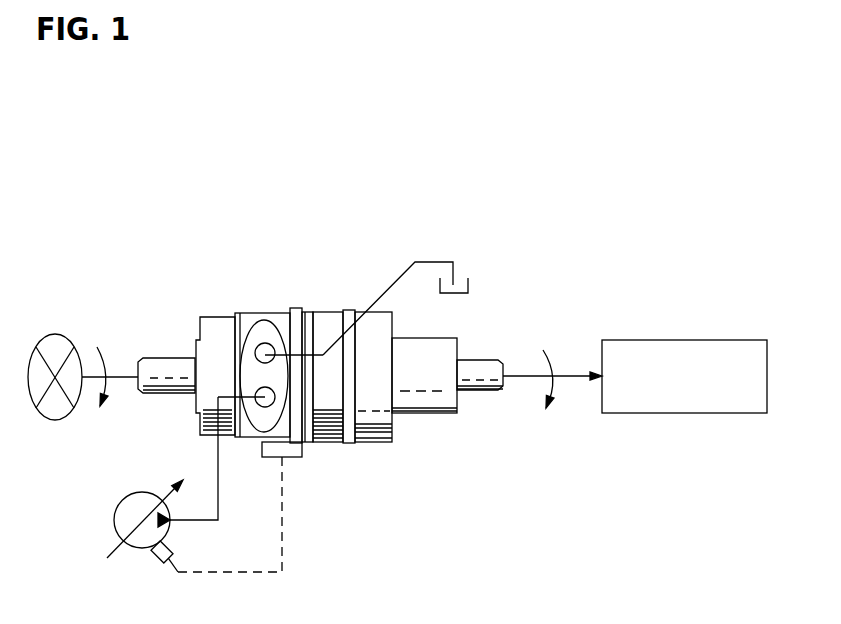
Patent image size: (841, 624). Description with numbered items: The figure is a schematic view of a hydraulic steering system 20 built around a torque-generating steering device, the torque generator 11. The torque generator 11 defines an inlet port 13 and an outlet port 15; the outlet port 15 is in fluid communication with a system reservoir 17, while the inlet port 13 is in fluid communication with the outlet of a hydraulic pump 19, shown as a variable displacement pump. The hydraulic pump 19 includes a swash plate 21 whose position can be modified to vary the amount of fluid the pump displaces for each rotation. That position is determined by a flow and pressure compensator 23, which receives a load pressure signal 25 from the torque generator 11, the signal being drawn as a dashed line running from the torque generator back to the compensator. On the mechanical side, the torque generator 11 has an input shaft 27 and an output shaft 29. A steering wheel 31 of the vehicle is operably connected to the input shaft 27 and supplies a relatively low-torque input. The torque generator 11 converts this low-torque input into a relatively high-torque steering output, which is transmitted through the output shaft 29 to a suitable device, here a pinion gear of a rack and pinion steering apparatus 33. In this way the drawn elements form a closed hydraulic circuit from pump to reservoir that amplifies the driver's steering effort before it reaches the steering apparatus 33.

The torque generator 11 is at (208, 308).
The inlet port 13 is at (265, 398).
The outlet port 15 is at (265, 352).
The system reservoir 17 is at (468, 293).
The hydraulic pump 19 is at (115, 512).
The hydraulic steering system 20 is at (270, 236).
The swash plate 21 is at (107, 558).
The flow and pressure compensator 23 is at (172, 548).
The load pressure signal 25 is at (282, 530).
The input shaft 27 is at (168, 372).
The output shaft 29 is at (475, 380).
The steering wheel 31 is at (30, 362).
The rack and pinion steering apparatus 33 is at (662, 413).